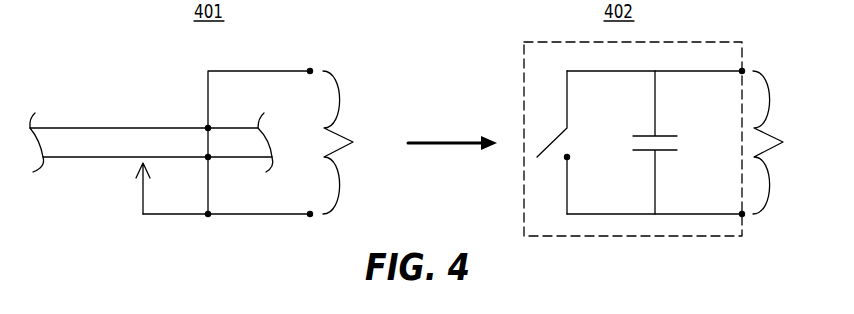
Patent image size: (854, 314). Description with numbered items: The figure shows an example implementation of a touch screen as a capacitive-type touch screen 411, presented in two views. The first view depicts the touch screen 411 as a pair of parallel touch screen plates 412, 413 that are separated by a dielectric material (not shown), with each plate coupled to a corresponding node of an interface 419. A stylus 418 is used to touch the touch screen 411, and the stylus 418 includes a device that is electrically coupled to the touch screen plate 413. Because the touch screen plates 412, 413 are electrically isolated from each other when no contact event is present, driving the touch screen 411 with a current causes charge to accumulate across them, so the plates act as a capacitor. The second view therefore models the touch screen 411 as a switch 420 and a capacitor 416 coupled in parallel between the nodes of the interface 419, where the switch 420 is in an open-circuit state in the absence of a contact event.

The capacitive-type touch screen 411 is at (96, 50).
The touch screen plate 412 is at (80, 128).
The touch screen plate 413 is at (82, 158).
The capacitor 416 is at (676, 143).
The stylus 418 is at (142, 188).
The interface 419 is at (570, 142).
The switch 420 is at (568, 142).